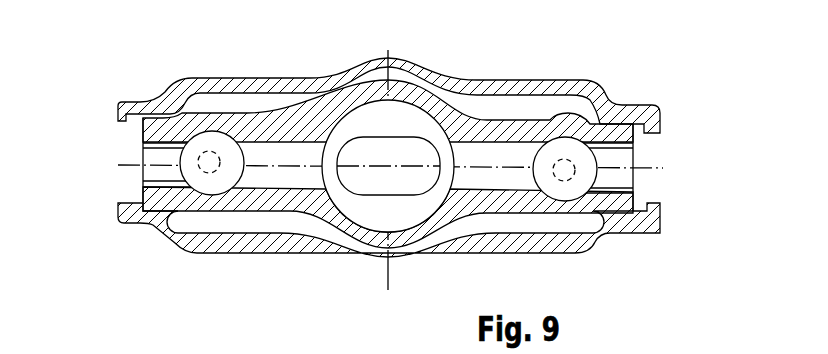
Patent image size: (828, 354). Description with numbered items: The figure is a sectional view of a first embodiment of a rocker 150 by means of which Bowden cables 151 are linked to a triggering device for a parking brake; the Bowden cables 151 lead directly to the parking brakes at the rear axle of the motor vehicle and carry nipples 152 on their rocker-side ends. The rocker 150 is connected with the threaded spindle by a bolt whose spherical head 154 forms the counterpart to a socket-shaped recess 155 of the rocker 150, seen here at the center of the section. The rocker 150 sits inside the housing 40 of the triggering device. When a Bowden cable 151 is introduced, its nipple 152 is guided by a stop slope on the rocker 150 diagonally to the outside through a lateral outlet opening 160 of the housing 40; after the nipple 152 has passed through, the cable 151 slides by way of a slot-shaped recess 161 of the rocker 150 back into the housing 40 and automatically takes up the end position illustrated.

The housing 40 is at (572, 88).
The rocker 150 is at (507, 130).
The Bowden cable 151 is at (214, 175).
The nipple 152 is at (221, 143).
The spherical head 154 is at (400, 120).
The socket-shaped recess 155 is at (423, 237).
The lateral outlet opening 160 is at (647, 161).
The slot-shaped recess 161 is at (152, 159).